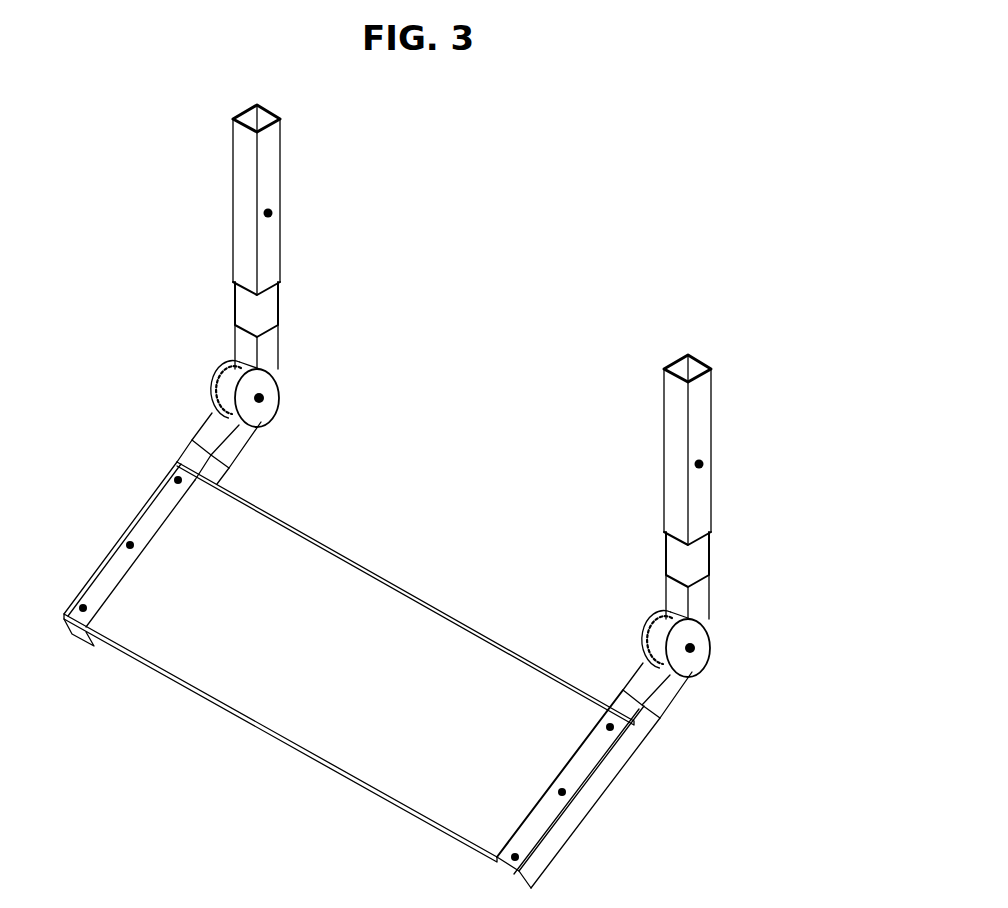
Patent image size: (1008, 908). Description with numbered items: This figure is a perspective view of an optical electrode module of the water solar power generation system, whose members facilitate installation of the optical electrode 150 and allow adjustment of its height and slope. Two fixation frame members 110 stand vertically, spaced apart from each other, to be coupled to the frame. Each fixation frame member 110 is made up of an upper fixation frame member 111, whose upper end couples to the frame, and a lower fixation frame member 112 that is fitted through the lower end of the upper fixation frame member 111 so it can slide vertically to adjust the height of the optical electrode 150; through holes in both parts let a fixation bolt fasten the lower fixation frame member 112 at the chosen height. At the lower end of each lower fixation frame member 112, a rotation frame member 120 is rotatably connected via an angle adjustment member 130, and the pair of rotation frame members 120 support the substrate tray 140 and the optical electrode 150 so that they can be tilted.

The fixation frame member 110 is at (765, 487).
The upper fixation frame member 111 is at (708, 388).
The lower fixation frame member 112 is at (710, 555).
The rotation frame member 120 is at (597, 813).
The angle adjustment member 130 is at (712, 658).
The substrate tray 140 is at (268, 735).
The optical electrode 150 is at (392, 606).